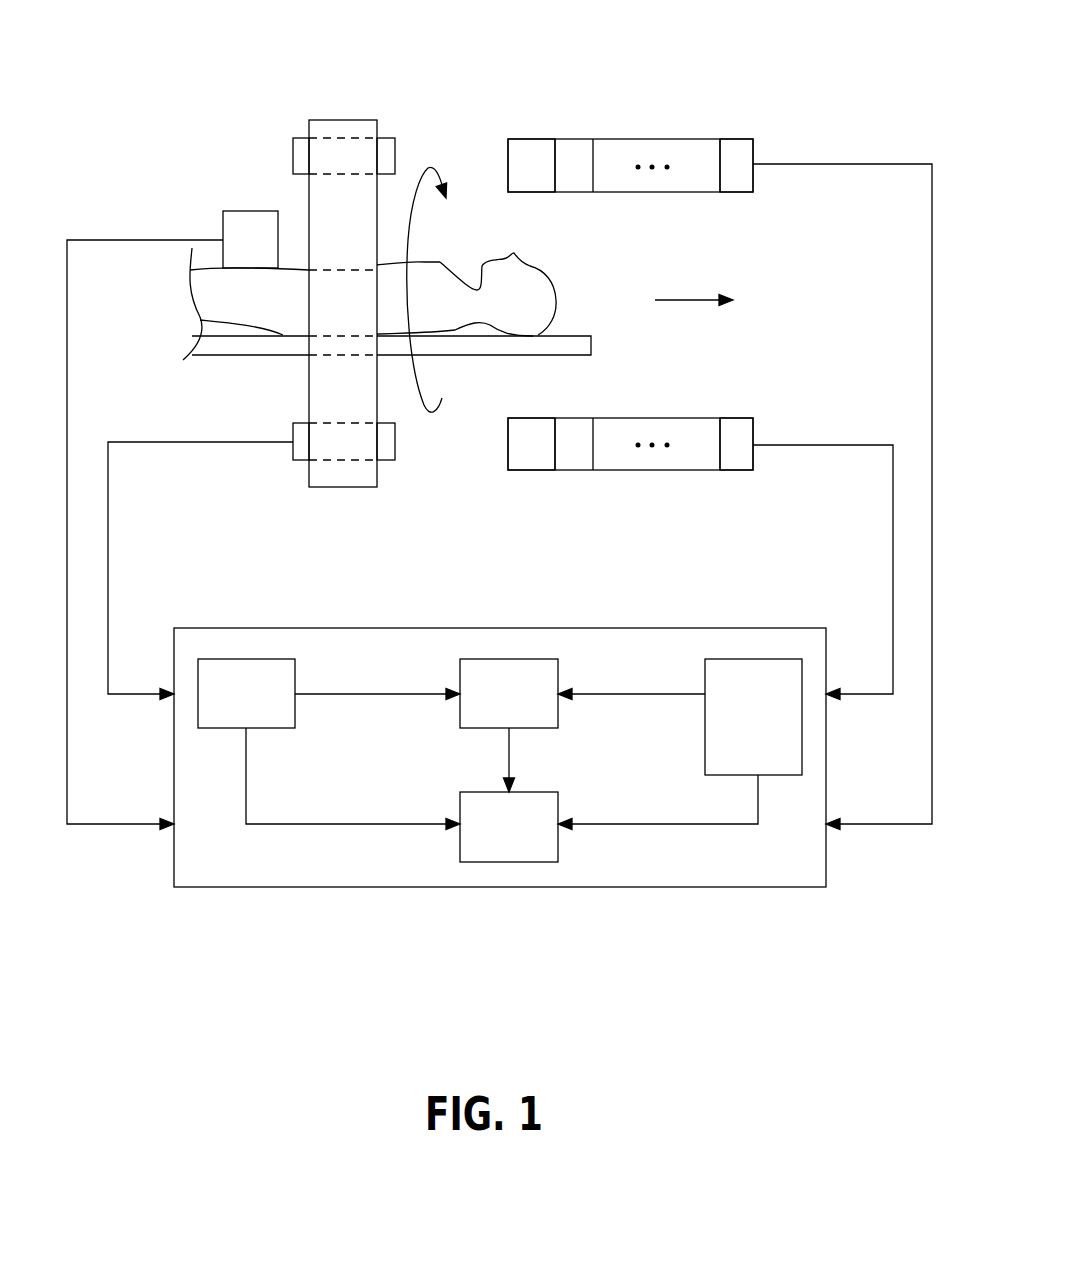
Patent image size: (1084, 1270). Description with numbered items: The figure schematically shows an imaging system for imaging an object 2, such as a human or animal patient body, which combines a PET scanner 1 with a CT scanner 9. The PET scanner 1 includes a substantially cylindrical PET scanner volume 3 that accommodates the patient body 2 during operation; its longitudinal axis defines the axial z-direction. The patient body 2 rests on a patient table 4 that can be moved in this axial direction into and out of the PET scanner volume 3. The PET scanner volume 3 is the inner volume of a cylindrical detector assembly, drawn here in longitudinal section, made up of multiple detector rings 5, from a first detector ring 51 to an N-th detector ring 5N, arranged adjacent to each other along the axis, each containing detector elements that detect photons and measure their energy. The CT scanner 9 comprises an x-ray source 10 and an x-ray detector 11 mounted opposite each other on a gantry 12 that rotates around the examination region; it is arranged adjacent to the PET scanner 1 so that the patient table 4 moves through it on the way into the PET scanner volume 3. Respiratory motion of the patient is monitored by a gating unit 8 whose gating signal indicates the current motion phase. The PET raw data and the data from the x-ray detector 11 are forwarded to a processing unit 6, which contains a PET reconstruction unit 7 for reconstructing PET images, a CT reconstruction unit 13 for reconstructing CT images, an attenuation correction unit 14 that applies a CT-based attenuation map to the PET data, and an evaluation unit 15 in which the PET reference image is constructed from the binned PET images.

The PET scanner 1 is at (818, 128).
The object 2 is at (440, 262).
The PET scanner volume 3 is at (716, 229).
The patient table 4 is at (530, 355).
The detector rings 5 is at (649, 302).
The first detector ring 51 is at (505, 533).
The N-th detector ring 5N is at (735, 148).
The processing unit 6 is at (745, 887).
The PET reconstruction unit 7 is at (746, 733).
The gating unit 8 is at (240, 252).
The CT scanner 9 is at (280, 98).
The x-ray source 10 is at (293, 155).
The x-ray detector 11 is at (395, 445).
The gantry 12 is at (358, 120).
The CT reconstruction unit 13 is at (232, 706).
The attenuation correction unit 14 is at (495, 840).
The evaluation unit 15 is at (495, 706).